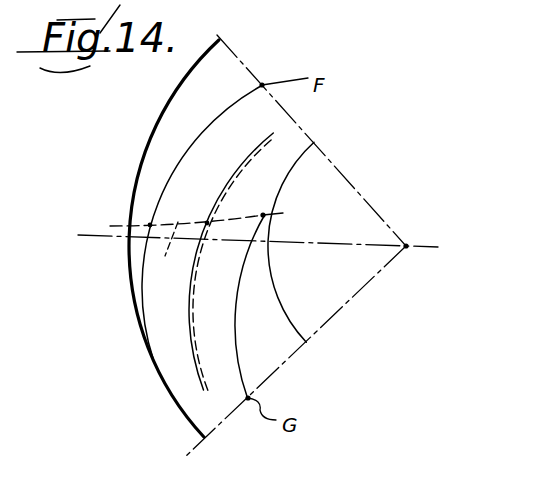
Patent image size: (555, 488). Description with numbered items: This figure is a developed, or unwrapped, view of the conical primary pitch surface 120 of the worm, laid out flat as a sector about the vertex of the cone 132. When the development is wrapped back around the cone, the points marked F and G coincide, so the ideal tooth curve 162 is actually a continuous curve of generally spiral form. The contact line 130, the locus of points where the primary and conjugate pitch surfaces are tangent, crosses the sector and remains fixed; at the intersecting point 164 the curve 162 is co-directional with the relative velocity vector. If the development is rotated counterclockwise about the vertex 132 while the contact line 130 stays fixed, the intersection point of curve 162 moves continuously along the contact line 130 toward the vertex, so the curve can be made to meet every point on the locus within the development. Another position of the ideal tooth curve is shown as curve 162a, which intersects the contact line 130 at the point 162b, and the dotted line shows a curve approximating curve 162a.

The primary pitch surface 120 is at (273, 359).
The contact line 130 is at (143, 258).
The vertex of the cone 132 is at (406, 246).
The ideal tooth curve 162 is at (220, 112).
The ideal tooth curve in another position 162a is at (249, 167).
The intersection point 162b is at (207, 224).
The intersecting point 164 is at (263, 214).